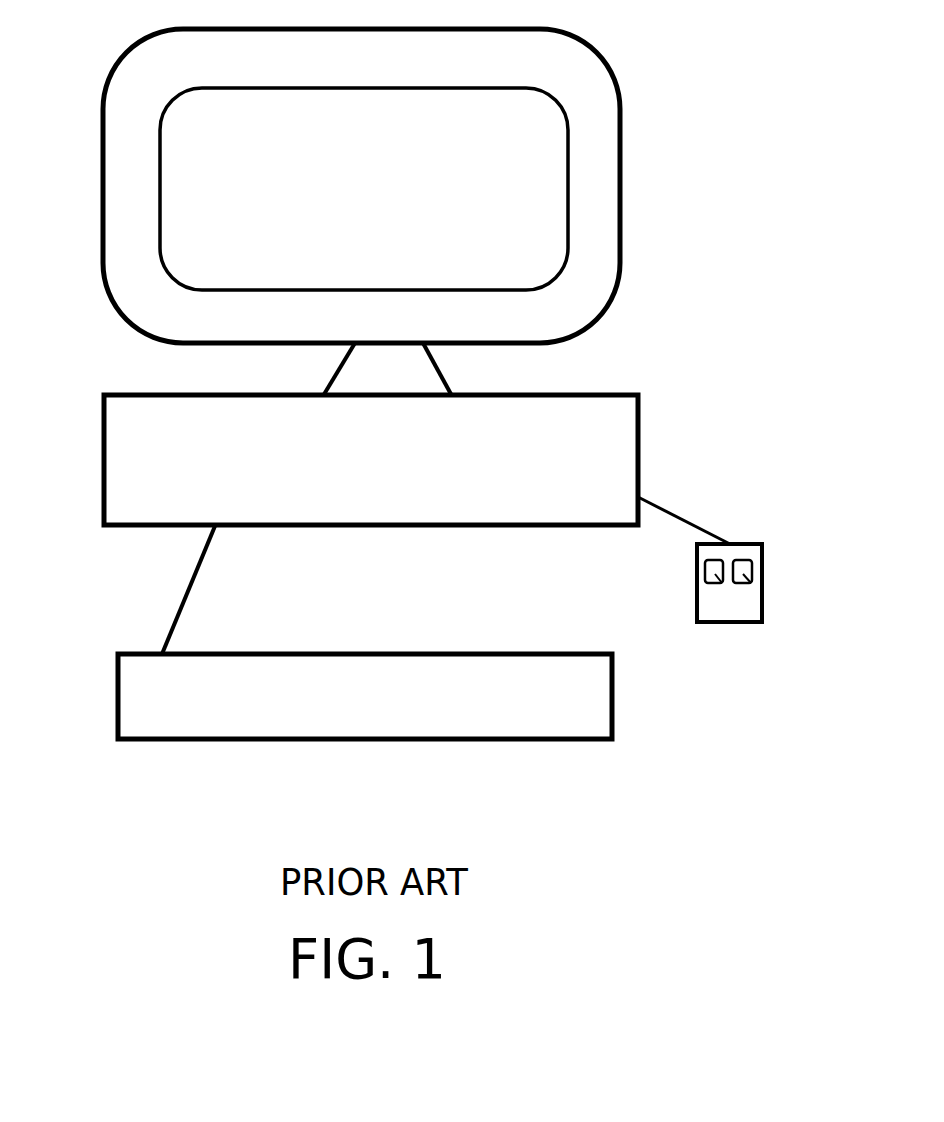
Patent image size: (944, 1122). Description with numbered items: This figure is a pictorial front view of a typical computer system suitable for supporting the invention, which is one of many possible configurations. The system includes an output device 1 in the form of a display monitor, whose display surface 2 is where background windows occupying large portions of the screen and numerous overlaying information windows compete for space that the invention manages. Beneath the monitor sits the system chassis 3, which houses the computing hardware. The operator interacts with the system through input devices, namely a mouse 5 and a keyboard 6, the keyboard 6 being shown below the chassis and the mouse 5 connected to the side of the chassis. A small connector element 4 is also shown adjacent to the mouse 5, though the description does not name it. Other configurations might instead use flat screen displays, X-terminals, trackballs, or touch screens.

The output device 1 is at (605, 88).
The display surface 2 is at (532, 168).
The system chassis 3 is at (622, 425).
The connector sockets 4 is at (720, 583).
The mouse 5 is at (718, 607).
The keyboard 6 is at (153, 695).